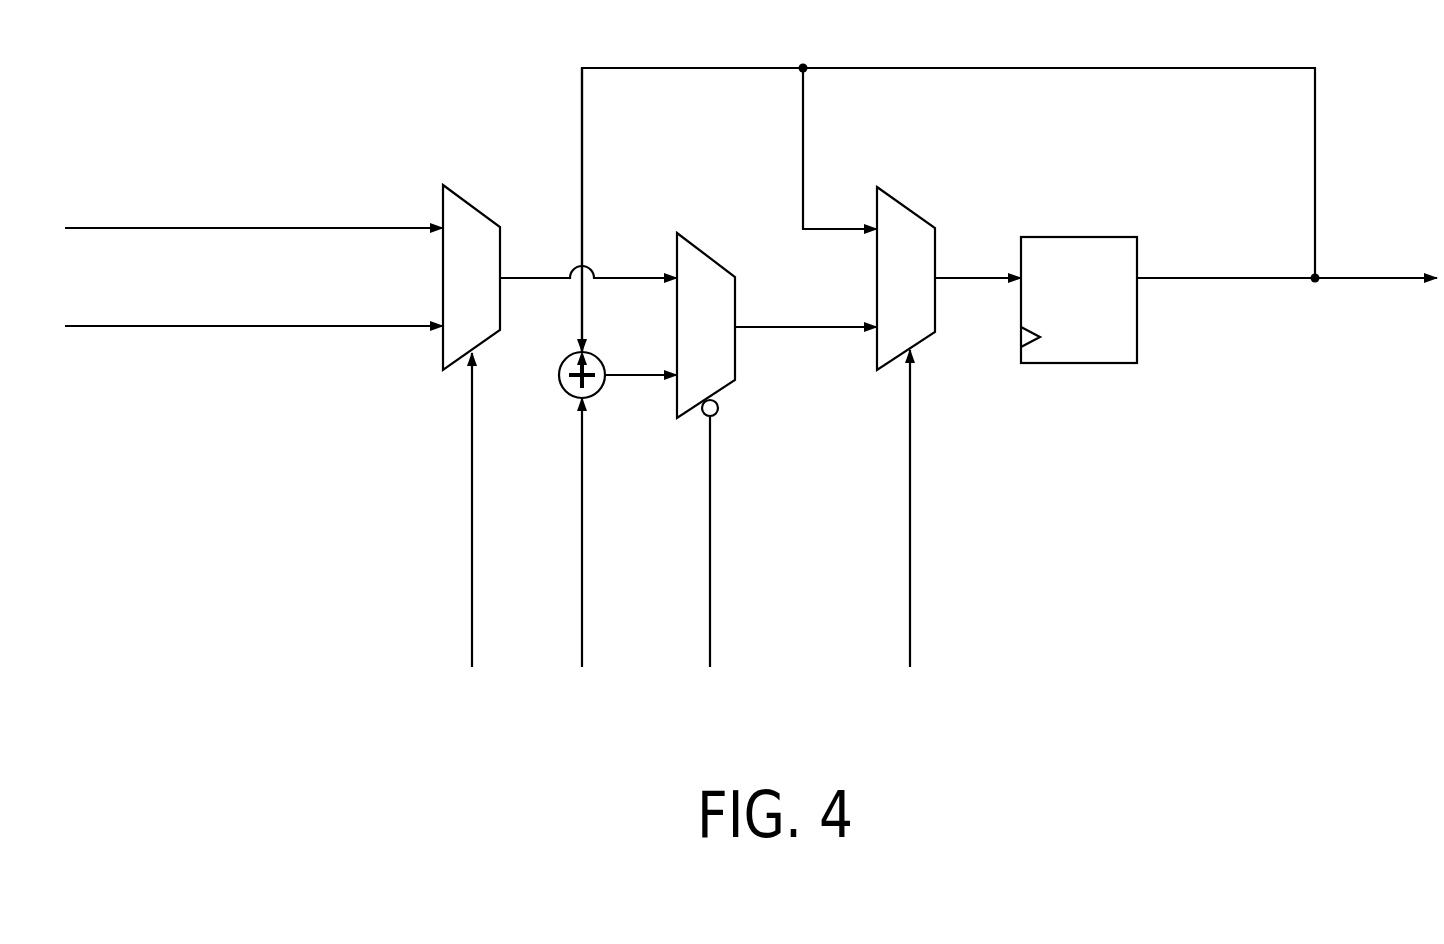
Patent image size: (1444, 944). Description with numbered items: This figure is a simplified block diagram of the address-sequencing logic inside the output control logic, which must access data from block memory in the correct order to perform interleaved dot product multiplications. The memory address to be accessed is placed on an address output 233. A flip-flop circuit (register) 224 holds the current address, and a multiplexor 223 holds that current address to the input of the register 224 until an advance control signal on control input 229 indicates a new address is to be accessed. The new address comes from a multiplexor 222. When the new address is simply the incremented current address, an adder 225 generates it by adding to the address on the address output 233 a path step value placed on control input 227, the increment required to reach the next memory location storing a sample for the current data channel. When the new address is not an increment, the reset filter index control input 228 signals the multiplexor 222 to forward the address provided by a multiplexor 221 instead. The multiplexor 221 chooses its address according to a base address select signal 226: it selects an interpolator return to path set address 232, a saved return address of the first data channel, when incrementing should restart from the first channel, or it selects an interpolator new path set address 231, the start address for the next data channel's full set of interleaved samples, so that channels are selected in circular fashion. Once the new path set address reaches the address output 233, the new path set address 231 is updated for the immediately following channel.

The multiplexor 221 is at (478, 205).
The multiplexor 222 is at (713, 253).
The multiplexor 223 is at (913, 205).
The flip-flop circuit (register) 224 is at (1078, 236).
The adder 225 is at (558, 377).
The base address select signal 226 is at (472, 655).
The path step control input 227 is at (582, 655).
The reset filter index control input 228 is at (710, 655).
The advance control input 229 is at (910, 655).
The interpolator new path set address 231 is at (150, 326).
The interpolator return to path set address 232 is at (150, 228).
The address output 233 is at (1375, 282).